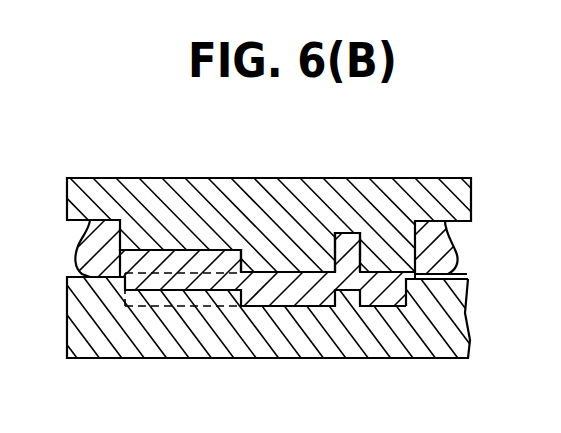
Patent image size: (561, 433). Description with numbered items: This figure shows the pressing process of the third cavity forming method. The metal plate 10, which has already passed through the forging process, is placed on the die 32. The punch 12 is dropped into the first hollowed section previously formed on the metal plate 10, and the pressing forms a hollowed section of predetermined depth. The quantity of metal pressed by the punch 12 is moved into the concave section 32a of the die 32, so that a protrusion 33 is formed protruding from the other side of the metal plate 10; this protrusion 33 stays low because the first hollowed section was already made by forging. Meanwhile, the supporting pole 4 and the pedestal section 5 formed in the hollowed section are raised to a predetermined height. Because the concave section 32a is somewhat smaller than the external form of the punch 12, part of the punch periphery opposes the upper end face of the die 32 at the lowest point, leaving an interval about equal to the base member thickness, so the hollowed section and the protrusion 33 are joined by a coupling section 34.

The punch 12 is at (455, 203).
The metal plate 10 is at (444, 238).
The coupling section 34 is at (450, 277).
The die 32 is at (455, 324).
The concave section 32a is at (390, 308).
The pedestal section 5 is at (158, 270).
The protrusion 33 is at (283, 308).
The supporting pole 4 is at (348, 258).